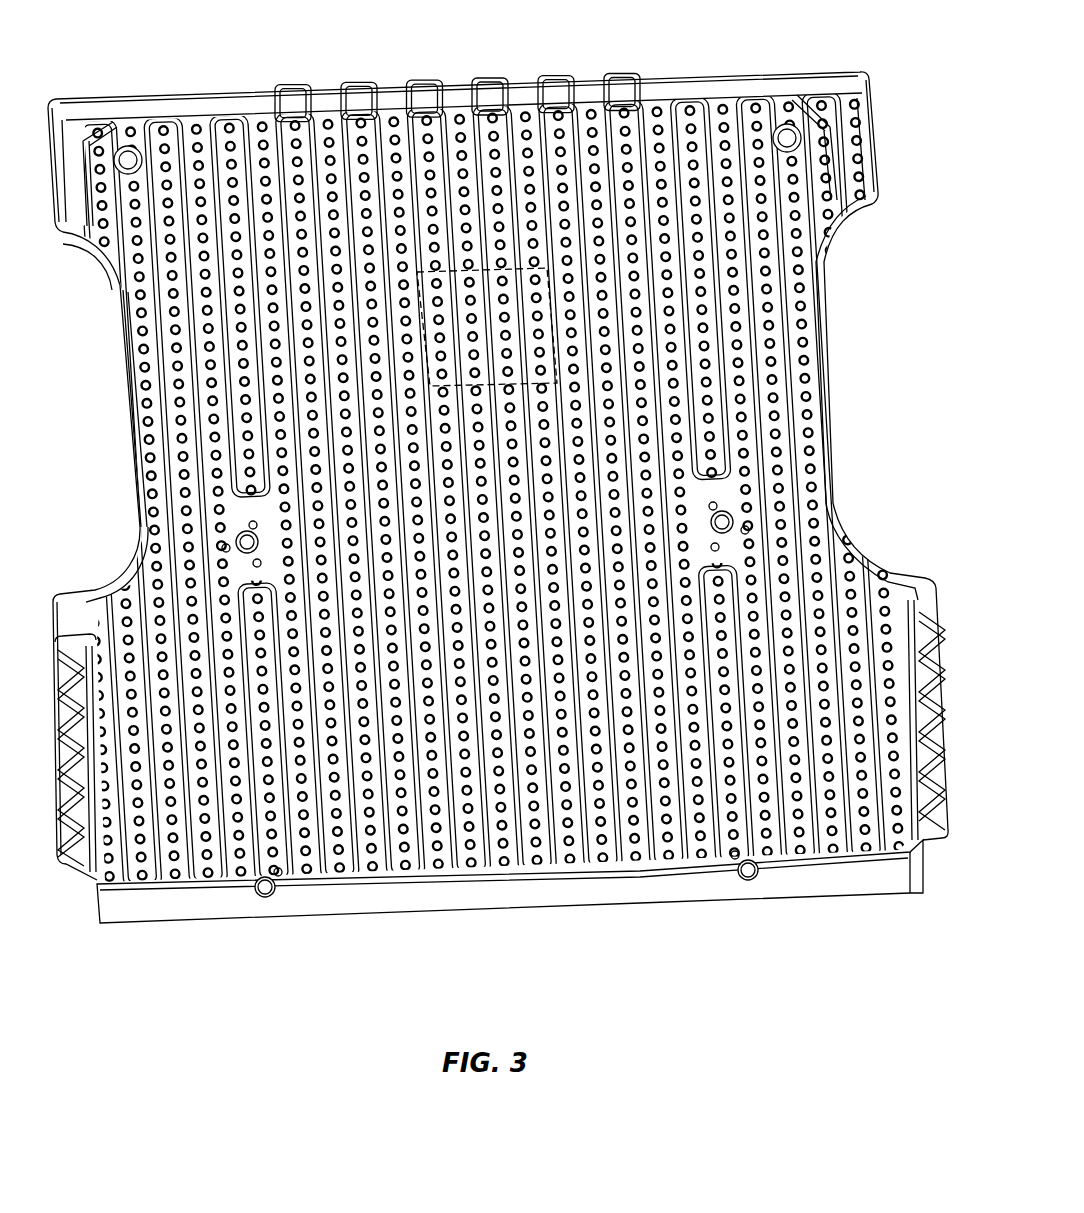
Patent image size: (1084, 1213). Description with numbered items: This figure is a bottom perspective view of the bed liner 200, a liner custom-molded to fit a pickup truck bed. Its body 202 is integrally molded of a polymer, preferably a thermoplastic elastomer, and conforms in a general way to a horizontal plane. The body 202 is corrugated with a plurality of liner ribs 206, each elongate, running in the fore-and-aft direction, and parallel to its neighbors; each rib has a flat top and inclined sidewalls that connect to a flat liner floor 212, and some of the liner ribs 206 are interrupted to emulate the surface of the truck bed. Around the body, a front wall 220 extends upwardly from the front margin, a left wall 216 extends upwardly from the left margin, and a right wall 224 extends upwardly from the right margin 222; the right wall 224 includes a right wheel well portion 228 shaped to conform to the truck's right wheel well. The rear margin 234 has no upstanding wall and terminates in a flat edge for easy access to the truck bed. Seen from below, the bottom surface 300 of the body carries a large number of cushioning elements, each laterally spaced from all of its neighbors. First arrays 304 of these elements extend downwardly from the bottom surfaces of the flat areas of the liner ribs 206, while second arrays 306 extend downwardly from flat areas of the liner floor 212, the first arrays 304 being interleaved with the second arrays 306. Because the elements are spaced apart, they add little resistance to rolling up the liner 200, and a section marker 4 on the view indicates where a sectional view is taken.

The bed liner 200 is at (842, 54).
The front wall 220 is at (191, 98).
The section line of FIG. 4 is at (538, 170).
The body 202 is at (688, 140).
The liner ribs 206 is at (712, 336).
The left wall 216 is at (870, 160).
The right margin 222 is at (122, 362).
The liner floor 212 is at (732, 547).
The right wheel well portion 228 is at (126, 578).
The right wall 224 is at (51, 630).
The bottom surface 300 is at (97, 847).
The first arrays 304 is at (405, 863).
The second arrays 306 is at (503, 863).
The rear margin 234 is at (555, 908).